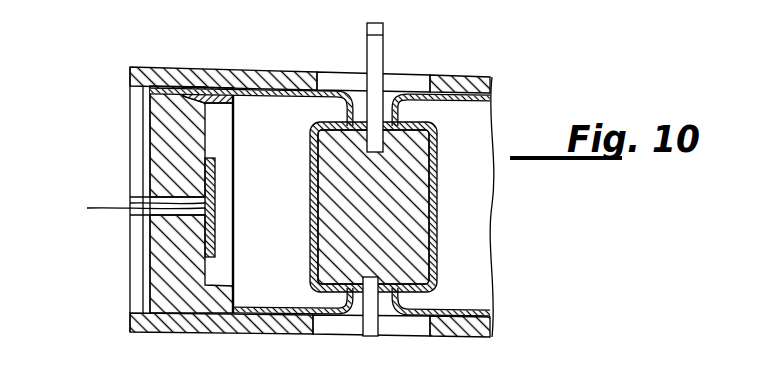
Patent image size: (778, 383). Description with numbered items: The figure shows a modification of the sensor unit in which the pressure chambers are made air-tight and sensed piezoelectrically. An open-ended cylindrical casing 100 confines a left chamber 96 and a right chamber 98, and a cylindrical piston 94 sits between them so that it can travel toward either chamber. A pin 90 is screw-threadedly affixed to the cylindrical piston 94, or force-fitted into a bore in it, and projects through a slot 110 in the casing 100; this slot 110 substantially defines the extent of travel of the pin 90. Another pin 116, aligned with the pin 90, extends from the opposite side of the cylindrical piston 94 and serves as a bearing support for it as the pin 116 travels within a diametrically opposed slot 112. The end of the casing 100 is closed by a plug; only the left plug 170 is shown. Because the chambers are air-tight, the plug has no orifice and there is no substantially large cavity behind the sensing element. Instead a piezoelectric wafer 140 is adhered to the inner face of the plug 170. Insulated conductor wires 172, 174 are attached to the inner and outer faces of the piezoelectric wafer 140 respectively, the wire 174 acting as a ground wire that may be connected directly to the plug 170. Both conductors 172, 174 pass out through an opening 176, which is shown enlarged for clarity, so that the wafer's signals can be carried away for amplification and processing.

The pin 90 is at (377, 58).
The cylindrical piston 94 is at (405, 242).
The left chamber 96 is at (292, 202).
The right chamber 98 is at (481, 203).
The cylindrical casing 100 is at (240, 70).
The slot 110 is at (422, 82).
The slot 112 is at (332, 330).
The pin 116 is at (382, 337).
The piezoelectric wafer 140 is at (215, 232).
The left plug 170 is at (167, 115).
The insulated conductor wire 172 is at (130, 197).
The ground wire 174 is at (103, 210).
The opening 176 is at (158, 185).